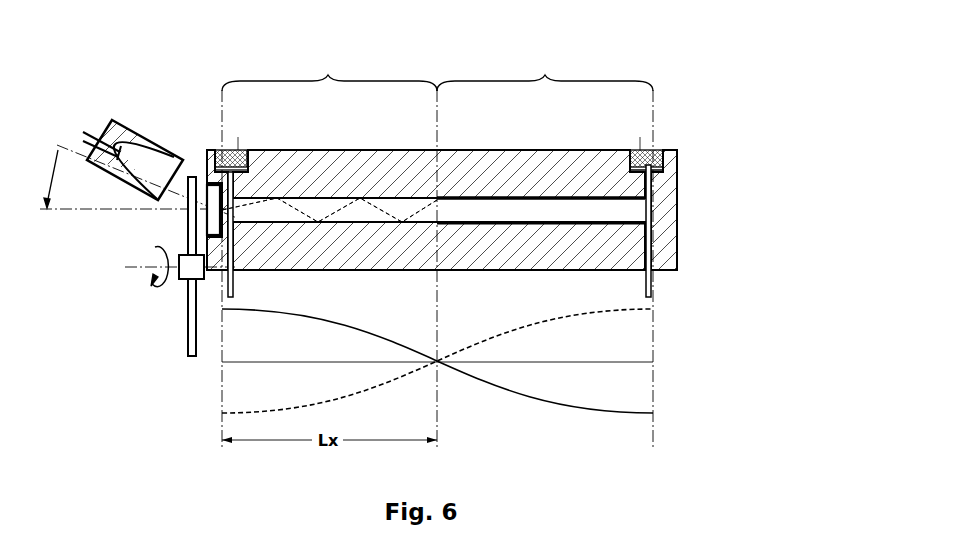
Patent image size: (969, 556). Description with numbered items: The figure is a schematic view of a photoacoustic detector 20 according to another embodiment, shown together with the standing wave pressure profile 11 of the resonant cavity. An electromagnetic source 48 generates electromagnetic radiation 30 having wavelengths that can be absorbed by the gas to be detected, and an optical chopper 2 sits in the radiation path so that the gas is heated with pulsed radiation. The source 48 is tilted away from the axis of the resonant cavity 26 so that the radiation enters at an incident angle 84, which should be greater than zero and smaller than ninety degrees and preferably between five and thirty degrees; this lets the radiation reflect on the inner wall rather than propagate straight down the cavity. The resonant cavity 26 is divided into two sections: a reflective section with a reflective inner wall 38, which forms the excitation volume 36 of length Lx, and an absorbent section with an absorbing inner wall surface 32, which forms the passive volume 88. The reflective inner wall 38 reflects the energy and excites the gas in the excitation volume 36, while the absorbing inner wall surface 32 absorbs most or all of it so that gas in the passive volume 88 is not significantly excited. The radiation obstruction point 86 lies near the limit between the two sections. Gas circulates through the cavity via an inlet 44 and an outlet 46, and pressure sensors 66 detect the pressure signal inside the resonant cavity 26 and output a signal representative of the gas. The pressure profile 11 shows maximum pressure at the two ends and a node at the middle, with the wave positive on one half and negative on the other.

The optical chopper 2 is at (192, 322).
The pressure profile 11 is at (482, 393).
The photoacoustic detector 20 is at (714, 91).
The resonant cavity 26 is at (527, 210).
The electromagnetic radiation 30 is at (346, 208).
The absorbing inner wall surface 32 is at (502, 207).
The excitation volume 36 is at (329, 73).
The reflective inner wall 38 is at (330, 208).
The inlet 44 is at (237, 280).
The outlet 46 is at (643, 277).
The electromagnetic source 48 is at (122, 133).
The pressure sensor 66 is at (247, 150).
The incident angle 84 is at (52, 179).
The radiation obstruction point 86 is at (437, 87).
The passive volume 88 is at (545, 73).